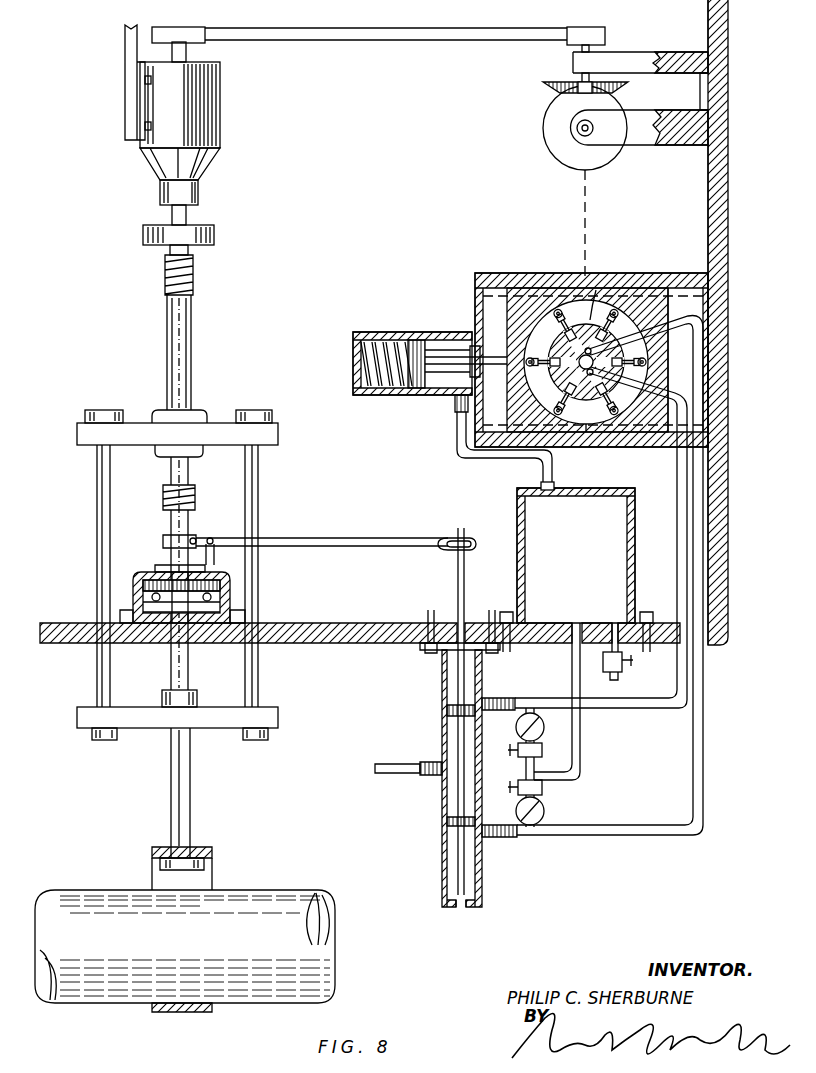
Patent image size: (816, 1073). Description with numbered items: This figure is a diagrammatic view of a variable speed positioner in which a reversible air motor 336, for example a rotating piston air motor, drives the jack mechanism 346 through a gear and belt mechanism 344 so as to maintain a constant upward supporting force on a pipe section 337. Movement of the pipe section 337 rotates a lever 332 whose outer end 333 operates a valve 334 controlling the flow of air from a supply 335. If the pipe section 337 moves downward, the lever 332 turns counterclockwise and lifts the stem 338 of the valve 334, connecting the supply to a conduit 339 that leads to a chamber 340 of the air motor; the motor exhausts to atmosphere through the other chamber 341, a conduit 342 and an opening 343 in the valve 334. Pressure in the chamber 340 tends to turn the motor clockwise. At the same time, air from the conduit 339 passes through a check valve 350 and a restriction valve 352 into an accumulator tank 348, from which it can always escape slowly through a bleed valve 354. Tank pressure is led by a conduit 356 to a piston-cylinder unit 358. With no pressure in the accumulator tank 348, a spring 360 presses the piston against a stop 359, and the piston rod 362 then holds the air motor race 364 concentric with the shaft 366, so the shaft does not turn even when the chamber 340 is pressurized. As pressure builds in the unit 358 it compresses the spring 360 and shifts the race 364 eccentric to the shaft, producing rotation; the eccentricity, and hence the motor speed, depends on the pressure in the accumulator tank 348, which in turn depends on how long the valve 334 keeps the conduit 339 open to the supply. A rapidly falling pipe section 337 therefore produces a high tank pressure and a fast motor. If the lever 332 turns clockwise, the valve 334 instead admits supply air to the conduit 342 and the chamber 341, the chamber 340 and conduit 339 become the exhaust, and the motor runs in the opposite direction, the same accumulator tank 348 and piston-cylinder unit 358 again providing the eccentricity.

The jack mechanism 346 is at (234, 278).
The gear and belt mechanism 344 is at (543, 127).
The reversible air motor 336 is at (591, 343).
The shaft 366 is at (604, 290).
The air motor race 364 is at (655, 286).
The piston rod 362 is at (457, 342).
The stop 359 is at (474, 345).
The piston-cylinder unit 358 is at (418, 340).
The spring 360 is at (394, 341).
The chamber 341 is at (586, 362).
The chamber 340 is at (585, 432).
The conduit 356 is at (457, 452).
The conduit 342 is at (704, 523).
The accumulator tank 348 is at (590, 573).
The lever 332 is at (370, 541).
The outer end 333 is at (478, 538).
The stem 338 is at (458, 586).
The conduit 339 is at (557, 702).
The bleed valve 354 is at (617, 678).
The check valve 350 is at (545, 733).
The restriction valve 352 is at (543, 752).
The supply 335 is at (391, 765).
The valve 334 is at (446, 809).
The opening 343 is at (461, 908).
The pipe section 337 is at (259, 890).